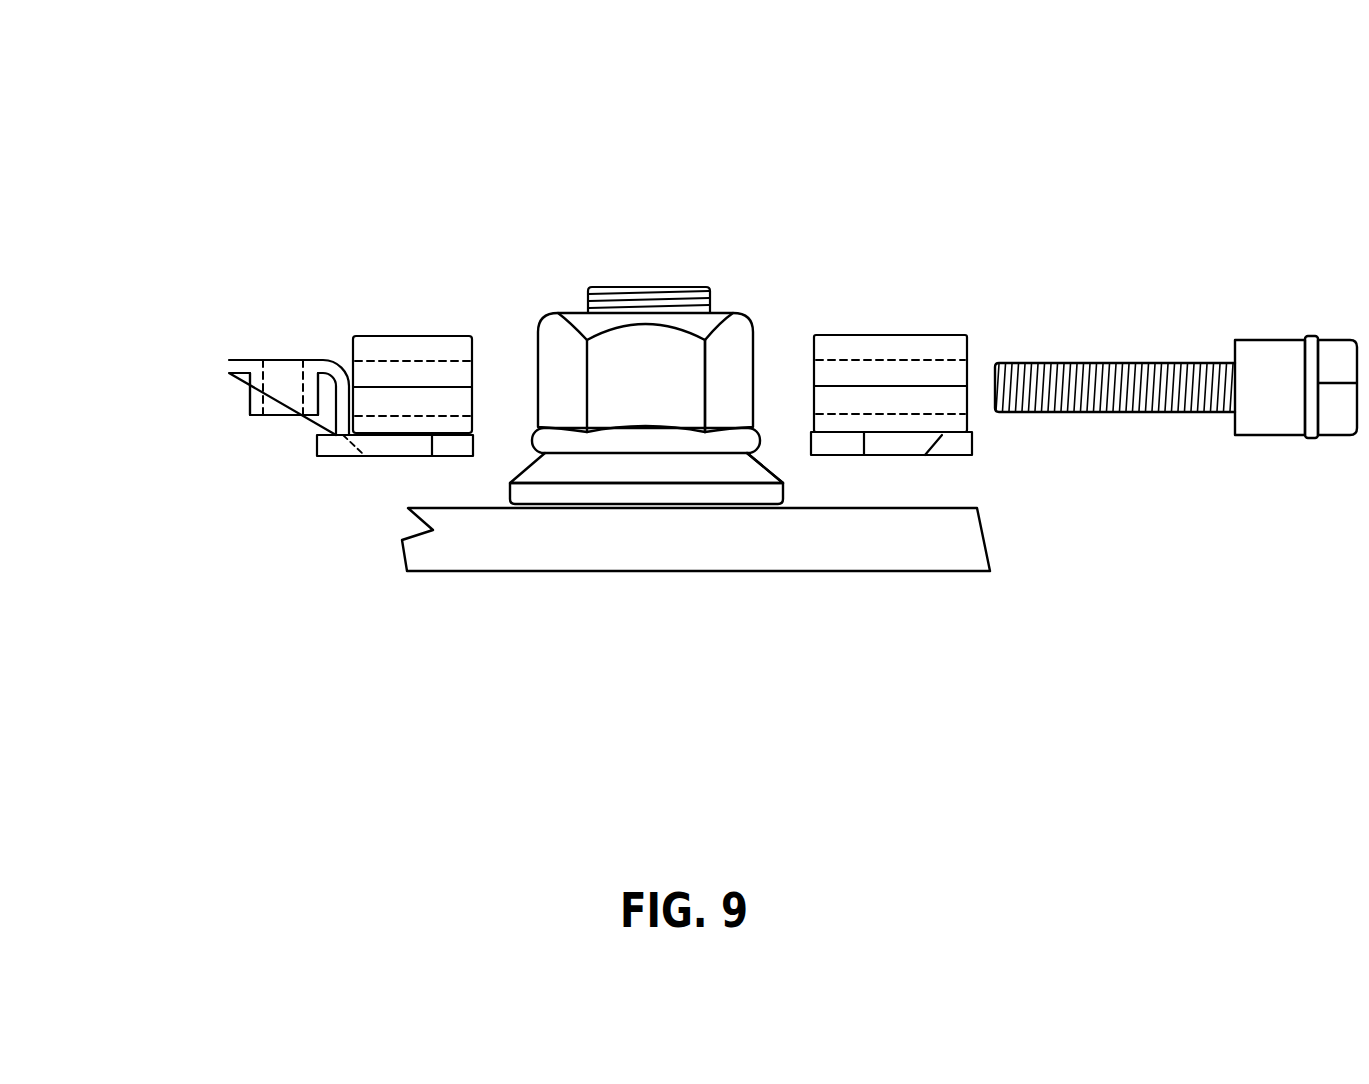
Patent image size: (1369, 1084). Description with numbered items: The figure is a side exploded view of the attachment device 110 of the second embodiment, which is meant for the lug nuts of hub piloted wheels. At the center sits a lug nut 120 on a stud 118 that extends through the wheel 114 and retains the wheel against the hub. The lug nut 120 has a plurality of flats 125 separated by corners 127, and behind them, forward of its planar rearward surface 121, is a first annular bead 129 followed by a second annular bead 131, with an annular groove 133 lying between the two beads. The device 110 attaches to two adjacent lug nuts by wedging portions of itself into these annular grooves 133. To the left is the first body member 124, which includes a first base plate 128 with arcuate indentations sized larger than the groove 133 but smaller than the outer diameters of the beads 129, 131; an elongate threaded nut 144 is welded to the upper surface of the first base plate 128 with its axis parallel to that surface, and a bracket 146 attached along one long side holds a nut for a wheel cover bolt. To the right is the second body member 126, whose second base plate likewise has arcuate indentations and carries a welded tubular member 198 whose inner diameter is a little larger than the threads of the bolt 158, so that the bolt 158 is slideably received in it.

The device 110 is at (1148, 262).
The wheel 114 is at (898, 560).
The stud 118 is at (662, 283).
The lug nut 120 is at (525, 428).
The planar rearward surface 121 is at (542, 513).
The first body member 124 is at (348, 482).
The flats 125 is at (570, 398).
The second body member 126 is at (888, 330).
The corners 127 is at (695, 392).
The first base plate 128 is at (307, 450).
The first annular bead 129 is at (765, 428).
The second annular bead 131 is at (500, 490).
The annular groove 133 is at (760, 452).
The elongate threaded nut 144 is at (350, 333).
The bracket 146 is at (225, 368).
The bolt 158 is at (1192, 420).
The tubular member 198 is at (947, 329).